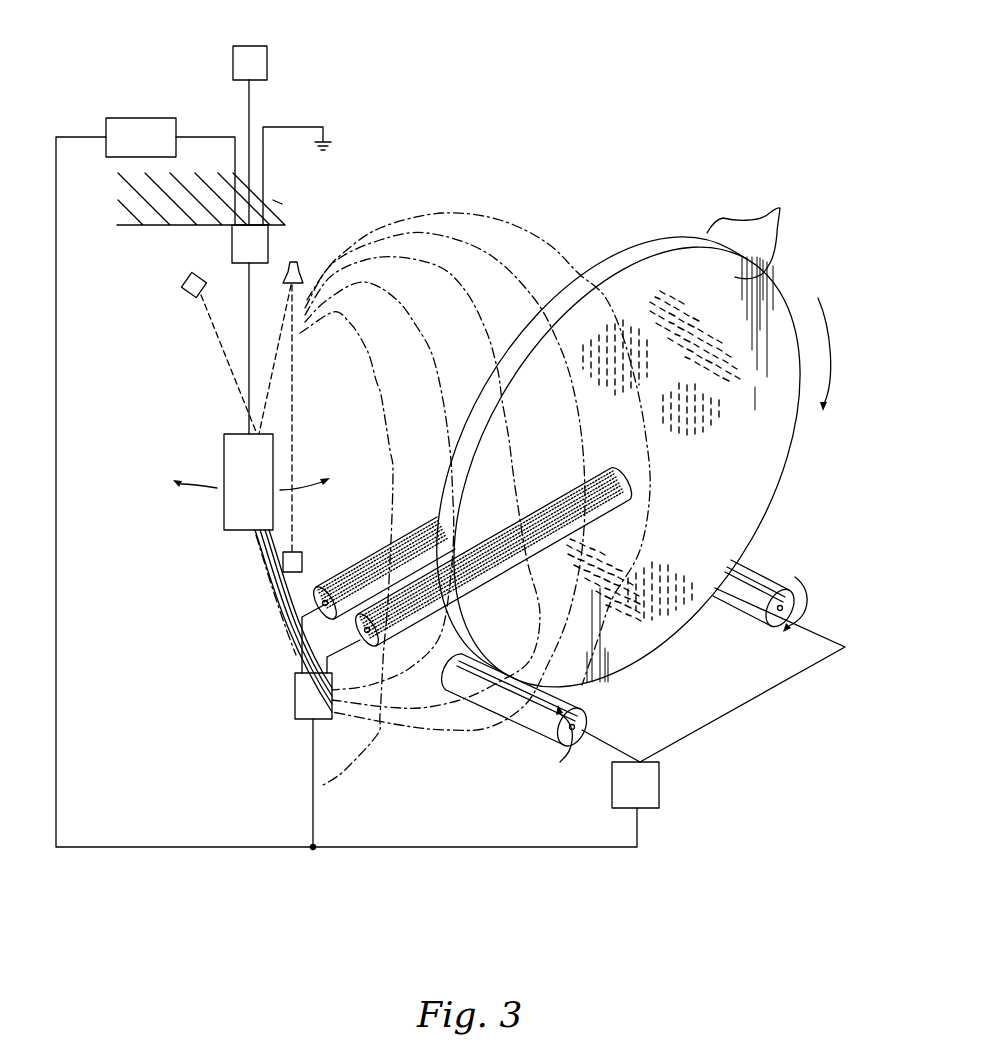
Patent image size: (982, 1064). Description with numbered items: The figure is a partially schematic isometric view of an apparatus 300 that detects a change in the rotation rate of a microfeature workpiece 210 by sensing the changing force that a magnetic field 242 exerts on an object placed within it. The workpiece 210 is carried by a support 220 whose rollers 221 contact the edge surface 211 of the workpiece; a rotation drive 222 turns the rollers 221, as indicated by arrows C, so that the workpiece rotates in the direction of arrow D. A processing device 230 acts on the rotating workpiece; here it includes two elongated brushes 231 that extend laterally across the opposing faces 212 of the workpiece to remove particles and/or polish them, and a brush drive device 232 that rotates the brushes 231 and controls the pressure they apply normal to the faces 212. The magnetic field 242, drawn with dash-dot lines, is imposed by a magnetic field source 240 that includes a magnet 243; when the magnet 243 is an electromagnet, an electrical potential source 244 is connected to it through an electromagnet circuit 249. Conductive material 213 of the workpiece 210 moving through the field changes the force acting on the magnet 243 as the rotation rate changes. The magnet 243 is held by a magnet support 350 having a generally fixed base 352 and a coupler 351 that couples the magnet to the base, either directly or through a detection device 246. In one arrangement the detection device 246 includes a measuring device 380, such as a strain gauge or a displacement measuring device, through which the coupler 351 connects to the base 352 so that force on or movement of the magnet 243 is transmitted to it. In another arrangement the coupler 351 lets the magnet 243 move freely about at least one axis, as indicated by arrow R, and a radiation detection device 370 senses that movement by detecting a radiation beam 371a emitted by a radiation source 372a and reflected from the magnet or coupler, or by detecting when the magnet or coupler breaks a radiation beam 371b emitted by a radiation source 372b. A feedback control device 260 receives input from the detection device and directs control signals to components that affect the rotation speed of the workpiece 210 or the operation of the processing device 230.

The microfeature workpiece 210 is at (626, 446).
The edge surface 211 is at (657, 247).
The faces 212 is at (781, 214).
The conductive material 213 is at (667, 390).
The support 220 is at (573, 677).
The rollers 221 is at (737, 596).
The rotation drive 222 is at (659, 785).
The processing device 230 is at (402, 660).
The brushes 231 is at (422, 587).
The brush drive device 232 is at (295, 704).
The magnetic field source 240 is at (208, 323).
The magnetic field 242 is at (320, 787).
The magnet 243 is at (225, 515).
The electrical potential source 244 is at (249, 46).
The detection device 246 is at (281, 241).
The electromagnet circuit 249 is at (249, 100).
The feedback control device 260 is at (130, 118).
The apparatus 300 is at (403, 910).
The magnet support 350 is at (225, 418).
The coupler 351 is at (247, 325).
The base 352 is at (157, 228).
The radiation detection device 370 is at (299, 279).
The radiation beam 371a is at (273, 367).
The radiation beam 371b is at (293, 424).
The radiation source 372a is at (189, 294).
The radiation source 372b is at (284, 575).
The measuring device 380 is at (232, 249).